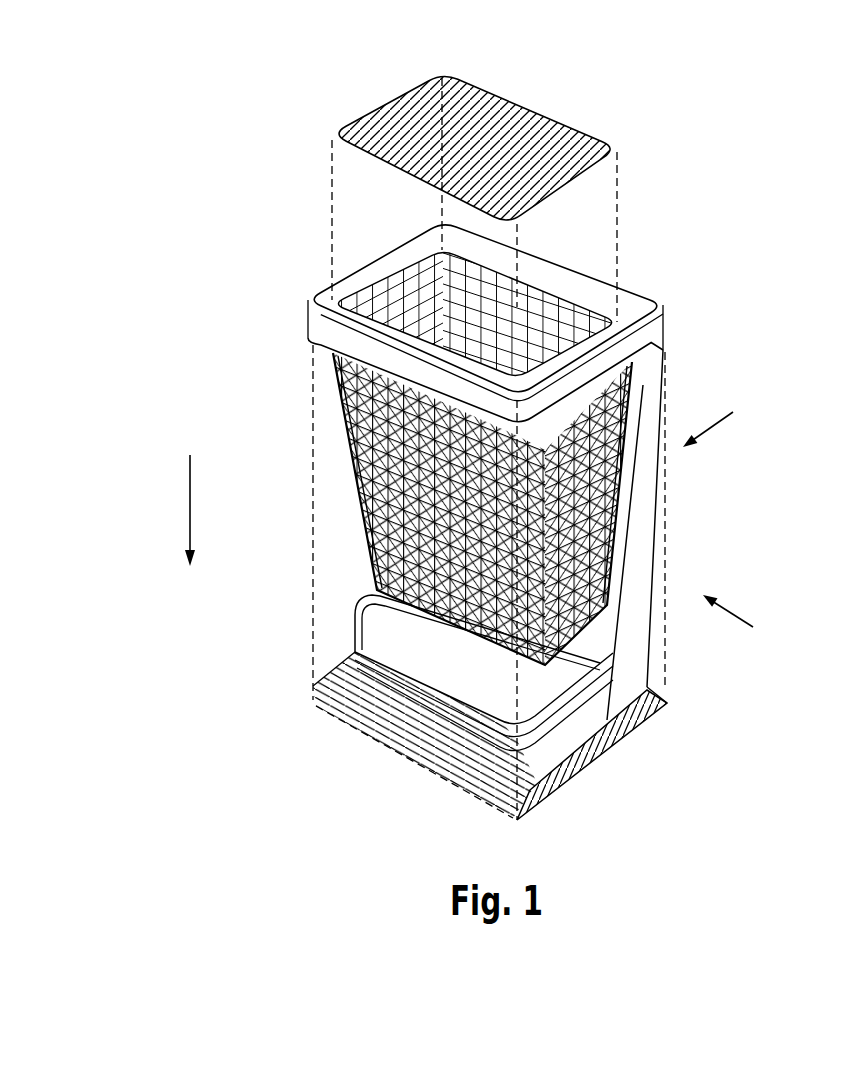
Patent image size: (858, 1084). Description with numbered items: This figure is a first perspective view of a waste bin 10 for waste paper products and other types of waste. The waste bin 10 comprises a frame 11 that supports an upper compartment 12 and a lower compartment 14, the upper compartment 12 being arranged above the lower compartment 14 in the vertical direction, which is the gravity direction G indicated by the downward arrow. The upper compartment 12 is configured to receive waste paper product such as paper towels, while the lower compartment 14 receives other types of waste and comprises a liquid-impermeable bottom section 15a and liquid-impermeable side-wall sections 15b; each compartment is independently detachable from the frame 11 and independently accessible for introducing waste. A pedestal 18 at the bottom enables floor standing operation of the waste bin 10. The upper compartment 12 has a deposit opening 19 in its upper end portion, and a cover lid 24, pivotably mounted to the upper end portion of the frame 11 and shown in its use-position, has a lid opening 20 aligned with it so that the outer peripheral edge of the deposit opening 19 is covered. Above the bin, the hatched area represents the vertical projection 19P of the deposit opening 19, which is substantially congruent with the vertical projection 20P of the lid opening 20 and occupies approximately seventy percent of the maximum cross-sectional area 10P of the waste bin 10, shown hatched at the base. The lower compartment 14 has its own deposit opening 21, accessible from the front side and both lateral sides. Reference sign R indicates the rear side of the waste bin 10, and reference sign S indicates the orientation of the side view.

The waste bin 10 is at (662, 216).
The maximum cross-sectional area 10P is at (543, 802).
The frame 11 is at (645, 517).
The upper compartment 12 is at (357, 478).
The lower compartment 14 is at (378, 608).
The liquid-impermeable bottom section 15a is at (470, 680).
The liquid-impermeable side-wall sections 15b is at (360, 634).
The pedestal 18 is at (640, 717).
The deposit opening 19 is at (542, 315).
The lid opening 20 is at (560, 306).
The vertical projection of an area of the deposit opening 19P is at (542, 147).
The vertical projection of an area of the lid opening 20P is at (590, 143).
The deposit opening 21 is at (400, 600).
The cover lid 24 is at (500, 312).
The gravity direction G is at (190, 480).
The rear side R is at (720, 422).
The orientation of the side view S is at (733, 612).